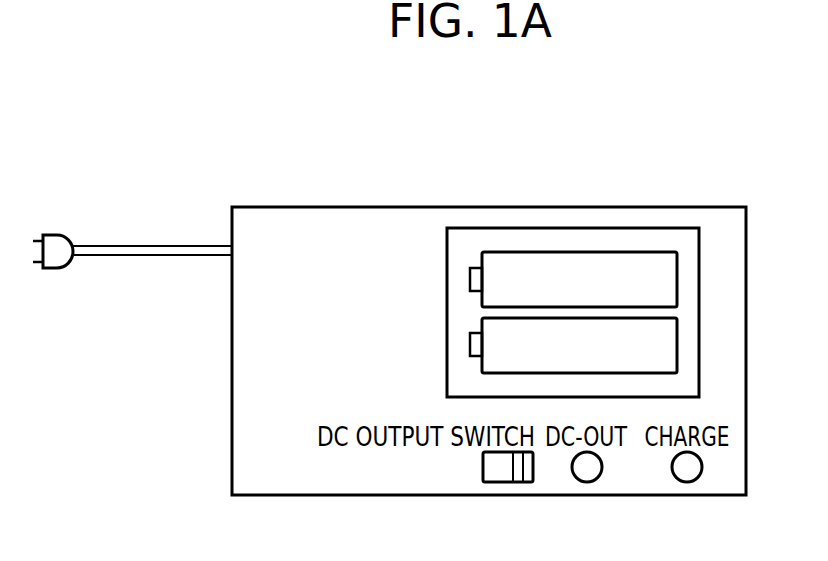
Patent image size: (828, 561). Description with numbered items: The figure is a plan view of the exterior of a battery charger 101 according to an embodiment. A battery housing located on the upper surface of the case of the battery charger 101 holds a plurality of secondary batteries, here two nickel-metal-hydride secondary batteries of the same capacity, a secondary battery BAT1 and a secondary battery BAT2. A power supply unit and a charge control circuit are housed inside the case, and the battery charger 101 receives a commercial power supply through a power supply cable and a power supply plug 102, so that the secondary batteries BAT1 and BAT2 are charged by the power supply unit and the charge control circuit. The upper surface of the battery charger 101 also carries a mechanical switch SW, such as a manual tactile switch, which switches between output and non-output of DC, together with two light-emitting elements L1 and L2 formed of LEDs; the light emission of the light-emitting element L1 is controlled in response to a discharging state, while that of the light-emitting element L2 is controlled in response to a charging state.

The battery charger 101 is at (706, 207).
The power supply plug 102 is at (55, 235).
The secondary battery BAT1 is at (520, 252).
The secondary battery BAT2 is at (678, 342).
The mechanical switch SW is at (495, 482).
The light-emitting element L1 is at (587, 482).
The light-emitting element L2 is at (687, 482).